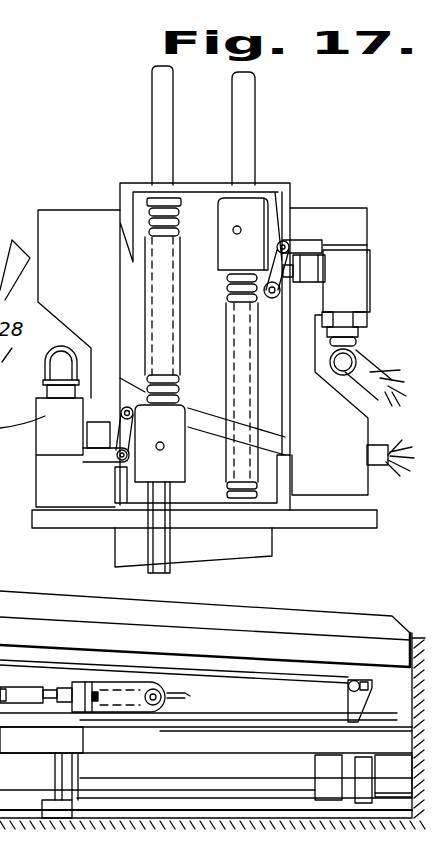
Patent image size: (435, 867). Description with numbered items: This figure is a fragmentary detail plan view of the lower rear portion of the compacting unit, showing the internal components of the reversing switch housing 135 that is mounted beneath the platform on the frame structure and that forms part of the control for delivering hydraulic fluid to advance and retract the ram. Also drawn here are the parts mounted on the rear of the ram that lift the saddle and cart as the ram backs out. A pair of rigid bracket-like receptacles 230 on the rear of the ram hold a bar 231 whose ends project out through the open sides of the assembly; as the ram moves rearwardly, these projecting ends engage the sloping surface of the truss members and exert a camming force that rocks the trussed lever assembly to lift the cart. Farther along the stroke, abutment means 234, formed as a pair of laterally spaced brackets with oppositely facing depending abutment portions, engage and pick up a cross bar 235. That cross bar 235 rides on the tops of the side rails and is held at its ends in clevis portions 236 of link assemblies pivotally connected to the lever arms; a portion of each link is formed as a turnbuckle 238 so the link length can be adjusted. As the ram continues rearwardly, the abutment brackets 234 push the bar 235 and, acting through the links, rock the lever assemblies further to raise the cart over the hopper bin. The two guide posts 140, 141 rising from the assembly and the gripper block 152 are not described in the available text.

The guide post 141 is at (155, 112).
The guide post 140 is at (250, 101).
The reversing switch housing 135 is at (355, 203).
The gripper block 152 is at (363, 262).
The abutment means 234 is at (240, 562).
The bar 231 is at (372, 650).
The turnbuckle 238 is at (43, 700).
The clevis portion 236 is at (117, 713).
The bar 235 is at (157, 706).
The bracket-like receptacle 230 is at (368, 681).